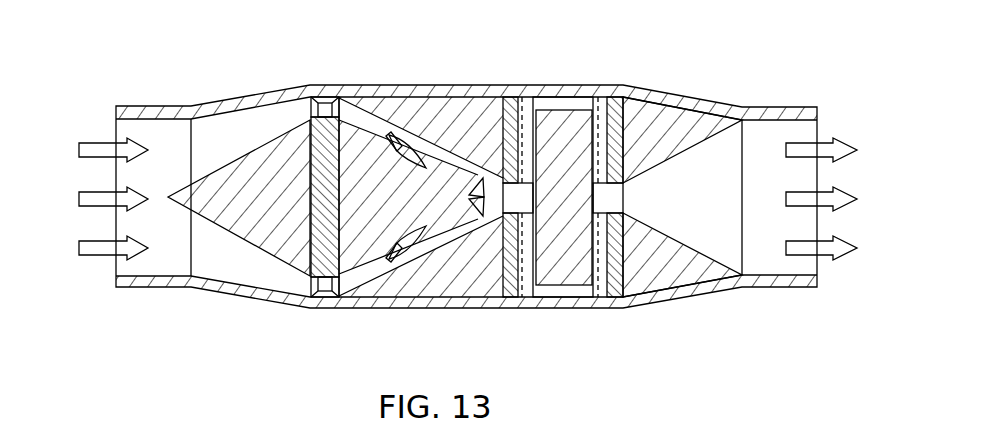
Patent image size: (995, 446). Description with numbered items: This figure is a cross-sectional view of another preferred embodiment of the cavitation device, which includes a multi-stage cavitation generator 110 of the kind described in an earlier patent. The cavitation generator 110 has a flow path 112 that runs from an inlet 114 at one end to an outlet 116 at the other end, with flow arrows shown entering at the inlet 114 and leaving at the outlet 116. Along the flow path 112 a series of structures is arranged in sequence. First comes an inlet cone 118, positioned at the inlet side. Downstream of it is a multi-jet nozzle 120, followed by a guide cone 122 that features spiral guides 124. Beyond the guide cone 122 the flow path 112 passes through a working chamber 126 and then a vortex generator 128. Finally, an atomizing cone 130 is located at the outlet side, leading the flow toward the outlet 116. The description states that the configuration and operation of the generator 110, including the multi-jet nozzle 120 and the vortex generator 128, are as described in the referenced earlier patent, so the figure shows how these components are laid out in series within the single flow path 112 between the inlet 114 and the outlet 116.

The multi-stage cavitation generator 110 is at (176, 65).
The flow path 112 is at (150, 230).
The inlet 114 is at (116, 130).
The outlet 116 is at (817, 130).
The inlet cone 118 is at (252, 237).
The multi-jet nozzle 120 is at (318, 300).
The guide cone 122 is at (368, 250).
The spiral guides 124 is at (463, 212).
The working chamber 126 is at (493, 203).
The vortex generator 128 is at (562, 285).
The atomizing cone 130 is at (685, 237).